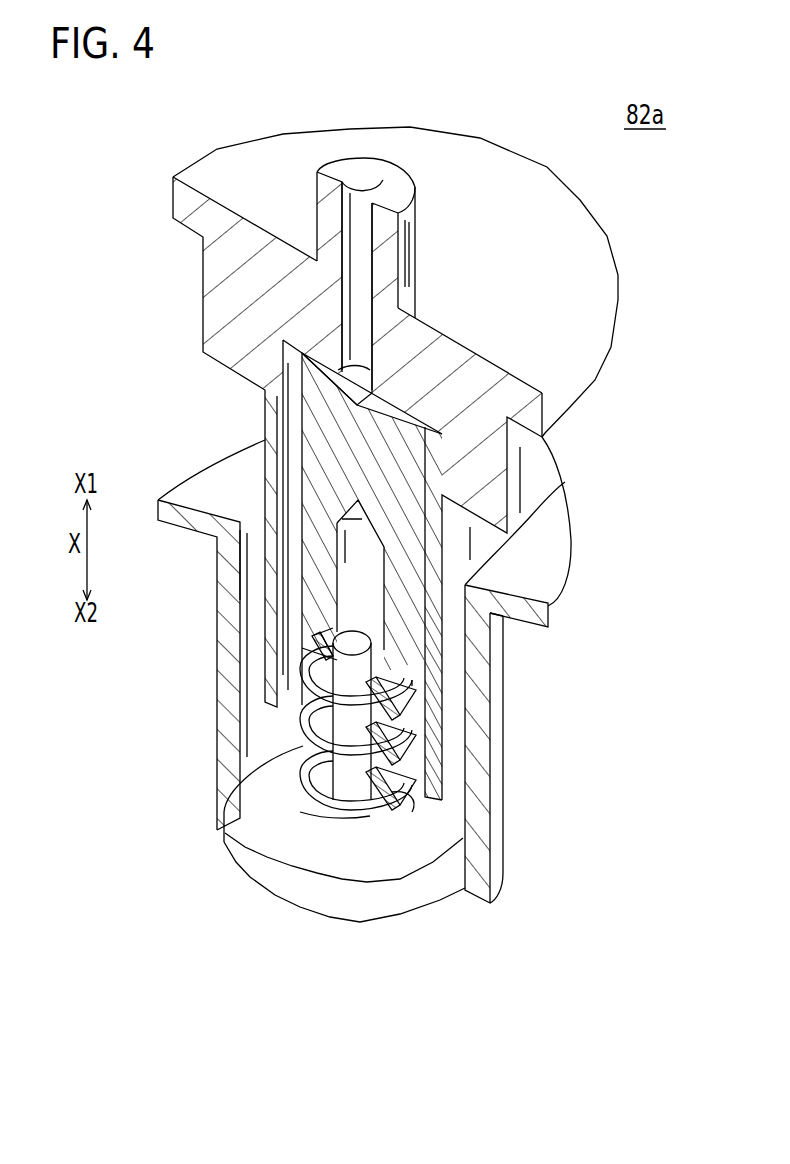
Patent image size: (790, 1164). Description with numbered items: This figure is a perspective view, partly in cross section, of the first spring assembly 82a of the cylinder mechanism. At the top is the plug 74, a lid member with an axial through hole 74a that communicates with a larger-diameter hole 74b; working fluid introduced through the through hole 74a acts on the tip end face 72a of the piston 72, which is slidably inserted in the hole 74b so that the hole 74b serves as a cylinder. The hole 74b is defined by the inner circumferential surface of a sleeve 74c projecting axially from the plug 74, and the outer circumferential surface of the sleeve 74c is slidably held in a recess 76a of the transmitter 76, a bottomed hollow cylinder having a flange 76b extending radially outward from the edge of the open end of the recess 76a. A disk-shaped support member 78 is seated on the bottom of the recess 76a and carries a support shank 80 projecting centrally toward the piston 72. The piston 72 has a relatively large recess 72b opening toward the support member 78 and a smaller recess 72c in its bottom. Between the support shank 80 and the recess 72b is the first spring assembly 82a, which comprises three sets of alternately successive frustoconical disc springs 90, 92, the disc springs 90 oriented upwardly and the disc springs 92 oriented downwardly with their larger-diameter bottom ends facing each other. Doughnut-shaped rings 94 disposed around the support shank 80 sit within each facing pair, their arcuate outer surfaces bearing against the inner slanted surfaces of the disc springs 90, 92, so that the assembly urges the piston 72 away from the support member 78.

The piston 72 is at (415, 466).
The tip end face 72a is at (358, 390).
The recess 72b is at (393, 733).
The recess 72c is at (363, 572).
The plug 74 is at (563, 205).
The through hole 74a is at (360, 190).
The hole 74b is at (302, 408).
The sleeve 74c is at (276, 432).
The transmitter 76 is at (507, 685).
The recess 76a is at (257, 615).
The flange 76b is at (538, 596).
The support member 78 is at (430, 872).
The support shank 80 is at (350, 677).
The first spring assembly 82a is at (367, 741).
The disc spring 90 is at (388, 793).
The disc spring 92 is at (400, 815).
The ring 94 is at (300, 767).